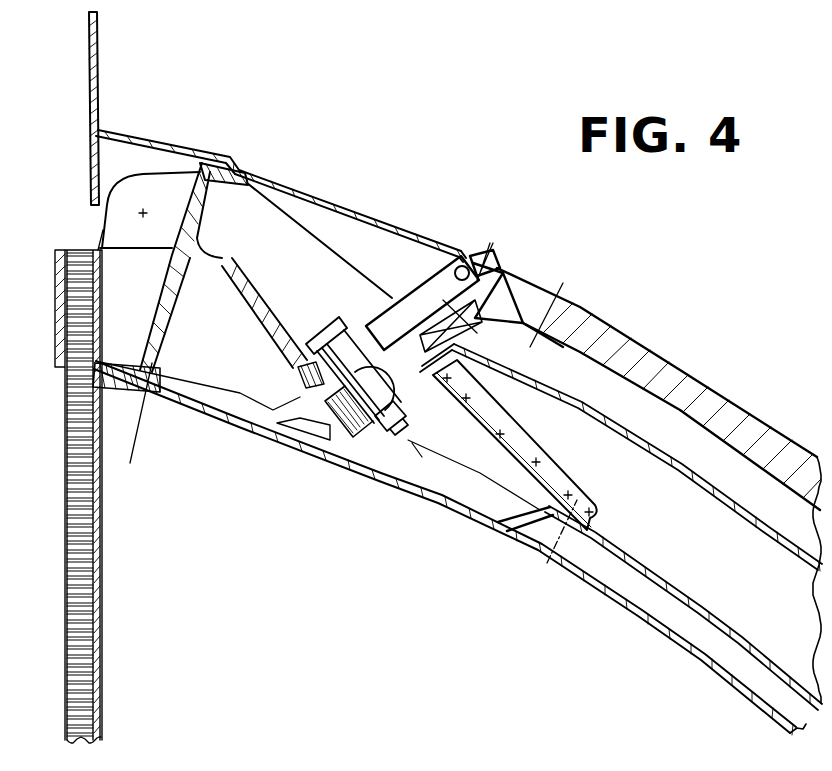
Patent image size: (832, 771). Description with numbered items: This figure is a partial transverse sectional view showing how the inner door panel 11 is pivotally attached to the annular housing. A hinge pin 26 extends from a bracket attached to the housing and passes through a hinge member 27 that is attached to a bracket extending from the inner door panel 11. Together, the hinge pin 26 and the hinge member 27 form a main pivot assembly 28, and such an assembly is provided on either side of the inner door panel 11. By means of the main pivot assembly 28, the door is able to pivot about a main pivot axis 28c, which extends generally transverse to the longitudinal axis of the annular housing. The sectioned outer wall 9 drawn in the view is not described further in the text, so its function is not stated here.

The outer shell 9 is at (617, 347).
The inner door panel 11 is at (653, 602).
The hinge pin 26 is at (297, 413).
The hinge member 27 is at (317, 447).
The main pivot assembly 28 is at (303, 493).
The main pivot axis 28c is at (328, 337).